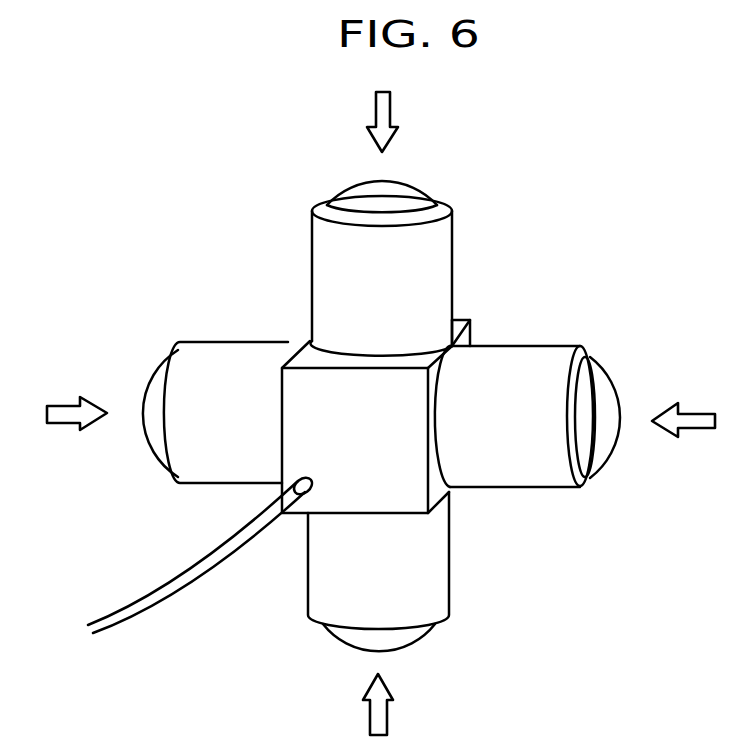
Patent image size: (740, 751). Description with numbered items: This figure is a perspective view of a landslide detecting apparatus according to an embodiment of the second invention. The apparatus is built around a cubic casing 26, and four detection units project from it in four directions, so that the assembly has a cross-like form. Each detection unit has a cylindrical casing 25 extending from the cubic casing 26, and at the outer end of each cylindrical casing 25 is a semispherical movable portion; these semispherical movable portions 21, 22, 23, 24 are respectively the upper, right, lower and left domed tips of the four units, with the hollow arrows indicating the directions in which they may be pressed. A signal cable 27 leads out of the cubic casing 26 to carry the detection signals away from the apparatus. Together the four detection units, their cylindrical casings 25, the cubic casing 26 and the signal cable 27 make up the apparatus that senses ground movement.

The semispherical movable portion 21 is at (408, 190).
The semispherical movable portion 22 is at (603, 393).
The semispherical movable portion 23 is at (400, 635).
The semispherical movable portion 24 is at (157, 383).
The cylindrical casing 25 is at (423, 276).
The cubic casing 26 is at (470, 335).
The signal cable 27 is at (178, 578).